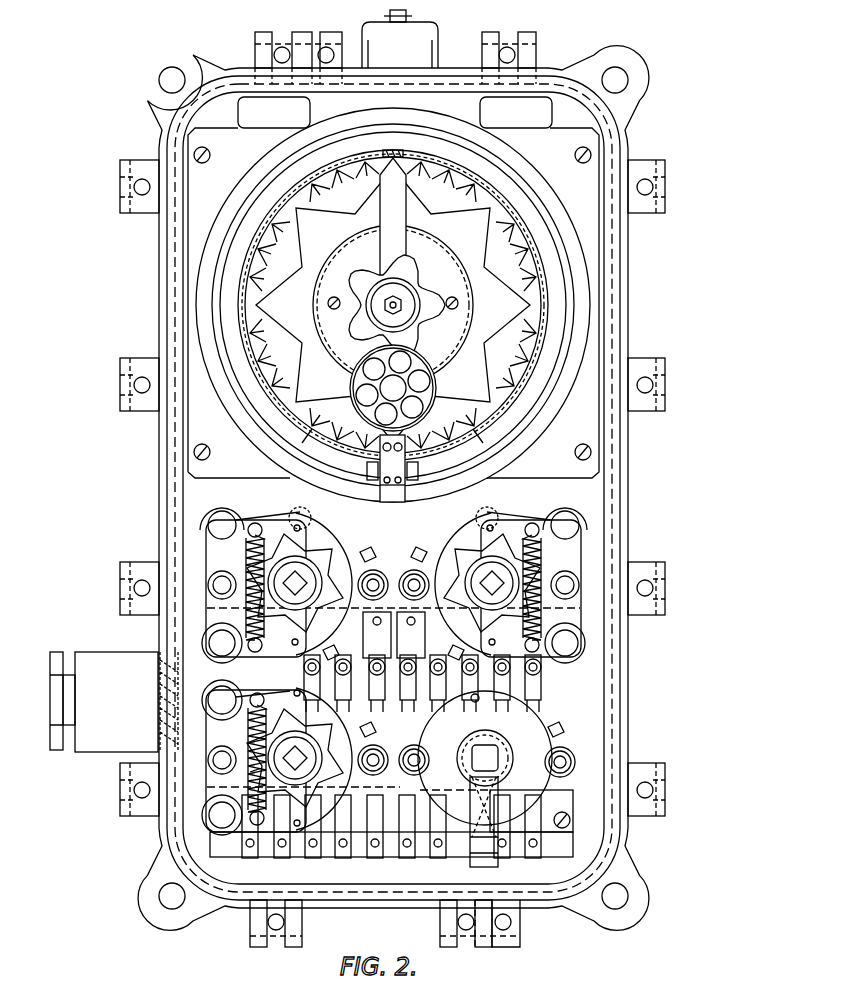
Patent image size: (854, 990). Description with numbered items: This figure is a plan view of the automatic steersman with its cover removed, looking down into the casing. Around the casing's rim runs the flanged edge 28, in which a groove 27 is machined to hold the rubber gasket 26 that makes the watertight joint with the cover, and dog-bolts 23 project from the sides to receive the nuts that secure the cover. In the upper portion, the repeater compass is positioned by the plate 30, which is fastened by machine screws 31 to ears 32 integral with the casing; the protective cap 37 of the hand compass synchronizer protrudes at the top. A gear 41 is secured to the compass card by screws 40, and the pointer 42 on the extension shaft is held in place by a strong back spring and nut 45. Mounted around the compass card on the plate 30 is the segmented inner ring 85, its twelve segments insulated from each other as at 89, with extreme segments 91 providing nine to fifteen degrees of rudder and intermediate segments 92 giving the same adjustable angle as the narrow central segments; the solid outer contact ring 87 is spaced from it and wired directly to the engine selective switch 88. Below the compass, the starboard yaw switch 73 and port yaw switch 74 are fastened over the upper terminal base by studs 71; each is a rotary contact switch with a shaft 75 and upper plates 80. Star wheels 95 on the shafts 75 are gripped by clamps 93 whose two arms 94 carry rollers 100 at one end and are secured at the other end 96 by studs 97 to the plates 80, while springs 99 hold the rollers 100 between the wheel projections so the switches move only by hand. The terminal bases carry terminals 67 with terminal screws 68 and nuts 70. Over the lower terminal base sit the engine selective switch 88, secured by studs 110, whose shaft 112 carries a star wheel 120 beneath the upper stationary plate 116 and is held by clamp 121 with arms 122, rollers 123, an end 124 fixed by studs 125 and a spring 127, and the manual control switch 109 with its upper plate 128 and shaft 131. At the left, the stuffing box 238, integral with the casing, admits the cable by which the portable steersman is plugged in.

The dog-bolts 23 is at (653, 587).
The rubber gasket 26 is at (615, 480).
The groove 27 is at (621, 446).
The flanged edge 28 is at (623, 500).
The plate 30 is at (393, 313).
The machine screws 31 is at (211, 455).
The ears 32 is at (395, 112).
The protective cap 37 is at (432, 48).
The screws 40 is at (334, 297).
The gear 41 is at (443, 255).
The pointer 42 is at (393, 219).
The nut 45 is at (398, 304).
The terminals 67 is at (391, 756).
The terminal screws 68 is at (377, 635).
The nuts 70 is at (411, 635).
The studs 71 is at (570, 580).
The starboard yaw switch 73 is at (585, 563).
The port yaw switch 74 is at (212, 556).
The shafts 75 is at (300, 578).
The upper plates 80 is at (362, 554).
The inner ring 85 is at (542, 406).
The outer contact ring 87 is at (393, 305).
The engine selective switch 88 is at (215, 737).
The insulation 89 is at (400, 134).
The extreme segments 91 is at (394, 305).
The segments 92 is at (393, 309).
The clamps 93 is at (290, 514).
The arms 94 is at (486, 518).
The star wheels 95 is at (393, 583).
The end 96 is at (208, 525).
The studs 97 is at (224, 517).
The springs 99 is at (393, 605).
The rollers 100 is at (318, 525).
The manual control switch 109 is at (543, 769).
The studs 110 is at (212, 768).
The shaft 112 is at (306, 757).
The upper stationary plate 116 is at (443, 723).
The star wheel 120 is at (295, 758).
The clamp 121 is at (286, 824).
The arms 122 is at (268, 692).
The rollers 123 is at (278, 759).
The end 124 is at (185, 672).
The studs 125 is at (228, 698).
The spring 127 is at (250, 772).
The upper plate 128 is at (485, 758).
The shaft 131 is at (493, 750).
The stuffing box 238 is at (104, 702).